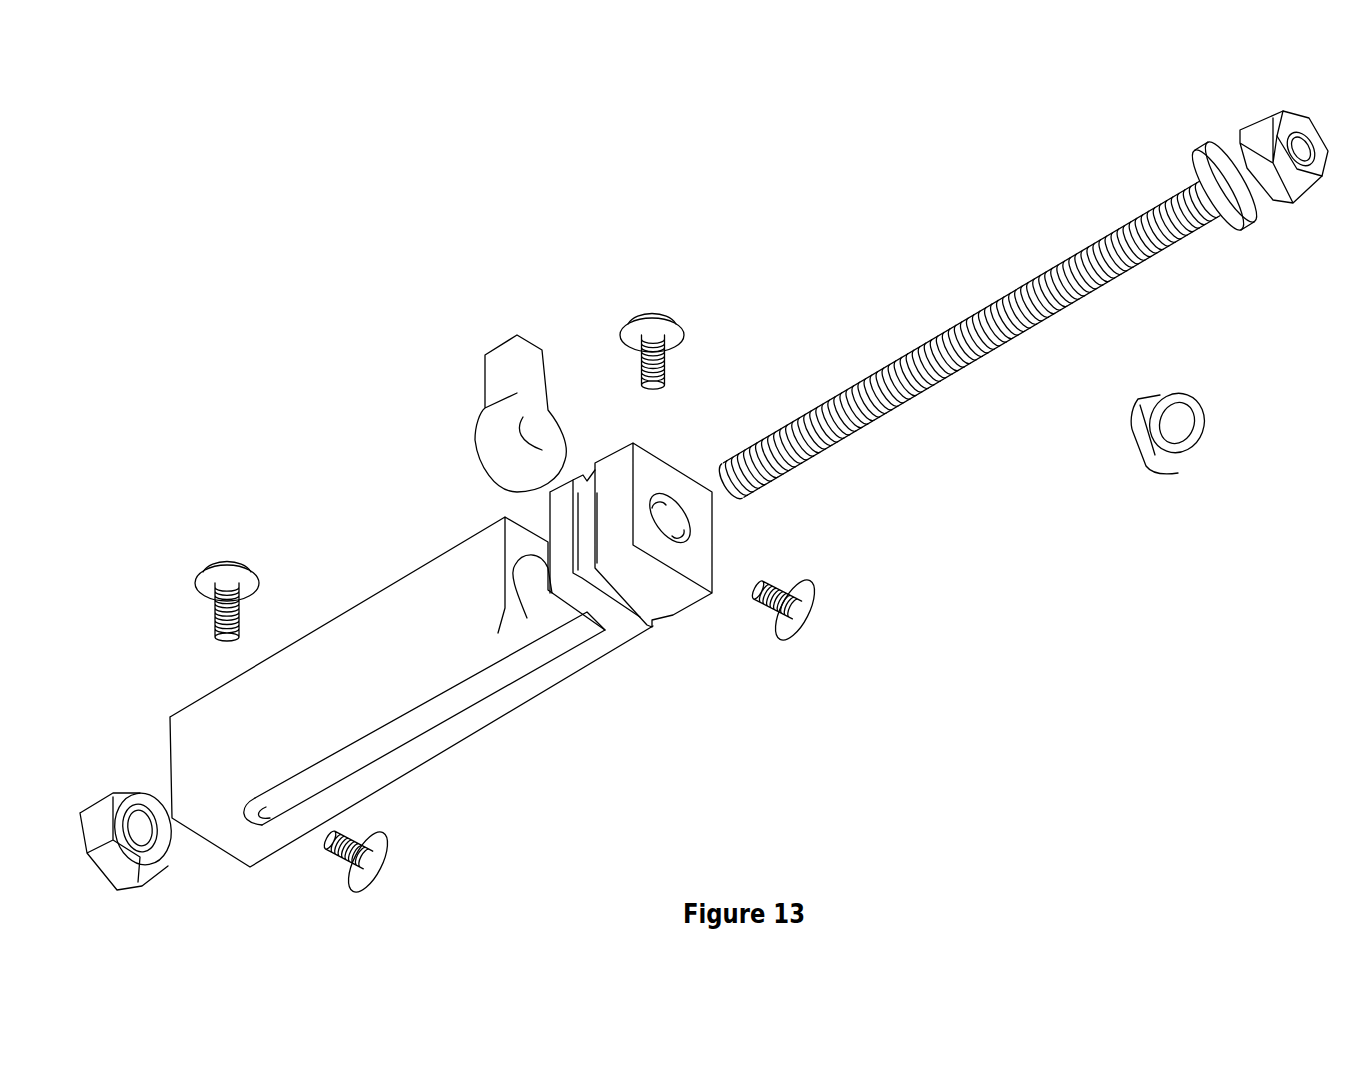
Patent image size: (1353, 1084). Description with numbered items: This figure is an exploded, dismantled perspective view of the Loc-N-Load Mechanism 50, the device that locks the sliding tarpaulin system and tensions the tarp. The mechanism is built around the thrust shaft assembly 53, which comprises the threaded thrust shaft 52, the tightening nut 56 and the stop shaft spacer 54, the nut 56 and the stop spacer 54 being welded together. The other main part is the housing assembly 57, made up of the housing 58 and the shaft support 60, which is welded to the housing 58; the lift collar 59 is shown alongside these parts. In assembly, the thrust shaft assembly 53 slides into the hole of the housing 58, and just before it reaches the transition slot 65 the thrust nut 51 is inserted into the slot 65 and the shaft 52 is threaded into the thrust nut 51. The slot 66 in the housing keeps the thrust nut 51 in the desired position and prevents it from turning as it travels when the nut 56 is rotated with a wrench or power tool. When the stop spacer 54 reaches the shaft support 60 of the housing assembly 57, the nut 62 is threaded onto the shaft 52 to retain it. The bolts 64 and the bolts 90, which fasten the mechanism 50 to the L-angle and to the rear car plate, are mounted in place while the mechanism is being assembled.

The Loc-N-Load Mechanism 50 is at (887, 662).
The thrust nut 51 is at (498, 383).
The thrust shaft 52 is at (969, 308).
The thrust shaft assembly 53 is at (937, 293).
The stop shaft spacer 54 is at (1205, 165).
The tightening nut 56 is at (1257, 132).
The housing assembly 57 is at (424, 630).
The housing 58 is at (328, 675).
The lift collar 59 is at (1152, 440).
The shaft support 60 is at (655, 588).
The nut 62 is at (97, 813).
The bolt 64 is at (654, 332).
The transition slot 65 is at (461, 760).
The slot 66 is at (402, 720).
The bolt 90 is at (790, 628).